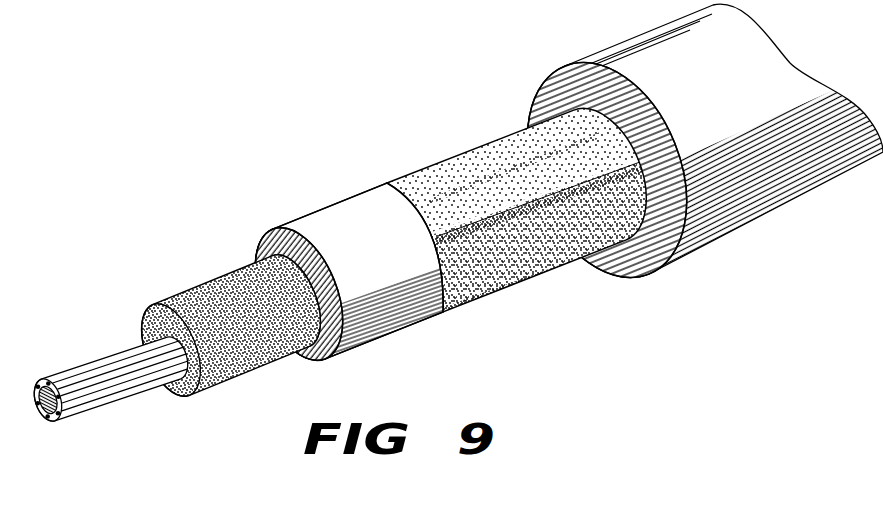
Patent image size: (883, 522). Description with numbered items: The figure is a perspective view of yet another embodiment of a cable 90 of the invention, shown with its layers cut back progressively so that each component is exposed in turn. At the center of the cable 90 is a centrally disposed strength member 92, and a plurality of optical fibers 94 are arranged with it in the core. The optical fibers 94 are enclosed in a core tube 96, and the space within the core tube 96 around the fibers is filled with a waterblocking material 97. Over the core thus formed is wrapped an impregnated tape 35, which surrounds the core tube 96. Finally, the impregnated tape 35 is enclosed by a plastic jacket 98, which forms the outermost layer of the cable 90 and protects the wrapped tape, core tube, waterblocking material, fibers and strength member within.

The cable 90 is at (354, 79).
The strength member 92 is at (87, 388).
The optical fibers 94 is at (100, 358).
The waterblocking material 97 is at (192, 290).
The core tube 96 is at (368, 338).
The impregnated tape 35 is at (468, 148).
The plastic jacket 98 is at (643, 266).